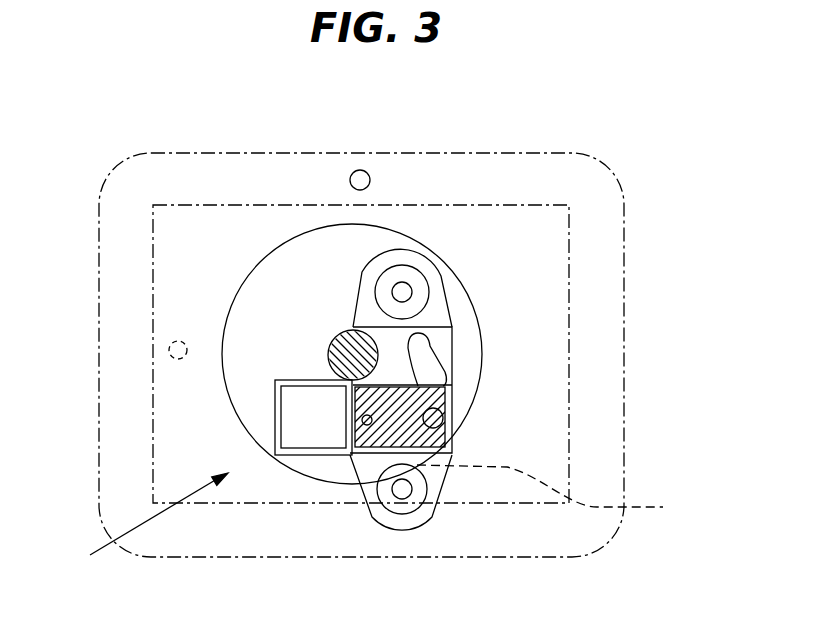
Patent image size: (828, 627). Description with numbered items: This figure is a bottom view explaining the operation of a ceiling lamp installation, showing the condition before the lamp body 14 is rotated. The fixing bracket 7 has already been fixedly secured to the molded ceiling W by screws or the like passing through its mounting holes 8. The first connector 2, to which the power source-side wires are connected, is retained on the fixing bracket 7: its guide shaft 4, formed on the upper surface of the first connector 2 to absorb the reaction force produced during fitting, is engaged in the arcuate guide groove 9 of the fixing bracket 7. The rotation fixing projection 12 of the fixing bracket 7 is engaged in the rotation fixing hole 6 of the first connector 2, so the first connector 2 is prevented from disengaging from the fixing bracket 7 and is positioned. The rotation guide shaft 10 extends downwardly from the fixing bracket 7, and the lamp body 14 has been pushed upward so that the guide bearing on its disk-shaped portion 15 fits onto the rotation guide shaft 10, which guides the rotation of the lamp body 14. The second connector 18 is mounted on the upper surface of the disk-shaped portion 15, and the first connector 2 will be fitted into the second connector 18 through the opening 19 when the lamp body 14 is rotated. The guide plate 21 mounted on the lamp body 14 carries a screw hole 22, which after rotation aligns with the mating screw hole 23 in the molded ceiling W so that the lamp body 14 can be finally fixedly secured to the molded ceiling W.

The first connector 2 is at (557, 490).
The guide shaft 4 is at (447, 398).
The rotation fixing hole 6 is at (545, 427).
The rotation fixing projection 12 is at (450, 445).
The fixing bracket 7 is at (452, 327).
The mounting holes 8 is at (404, 283).
The arcuate guide groove 9 is at (426, 368).
The rotation guide shaft 10 is at (333, 350).
The lamp body 14 is at (140, 529).
The disk-shaped portion 15 is at (287, 244).
The second connector 18 is at (275, 432).
The opening 19 is at (350, 387).
The guide plate 21 is at (624, 305).
The screw hole 22 is at (368, 175).
The mating screw hole 23 is at (170, 345).
The molded ceiling W is at (78, 360).